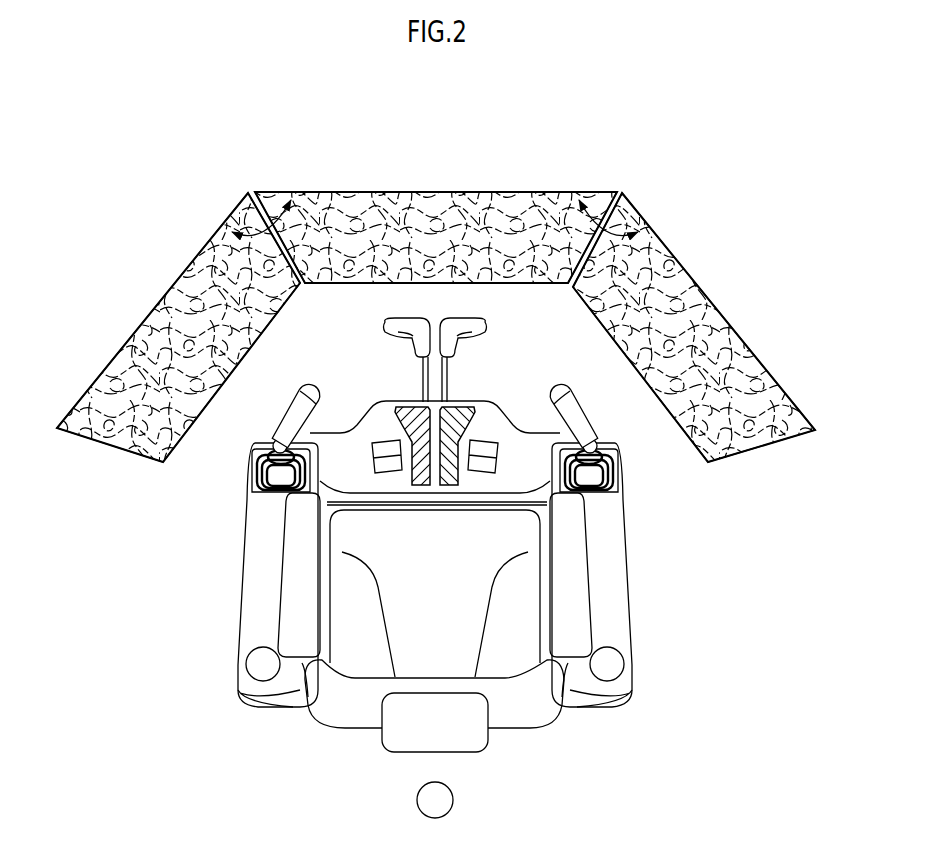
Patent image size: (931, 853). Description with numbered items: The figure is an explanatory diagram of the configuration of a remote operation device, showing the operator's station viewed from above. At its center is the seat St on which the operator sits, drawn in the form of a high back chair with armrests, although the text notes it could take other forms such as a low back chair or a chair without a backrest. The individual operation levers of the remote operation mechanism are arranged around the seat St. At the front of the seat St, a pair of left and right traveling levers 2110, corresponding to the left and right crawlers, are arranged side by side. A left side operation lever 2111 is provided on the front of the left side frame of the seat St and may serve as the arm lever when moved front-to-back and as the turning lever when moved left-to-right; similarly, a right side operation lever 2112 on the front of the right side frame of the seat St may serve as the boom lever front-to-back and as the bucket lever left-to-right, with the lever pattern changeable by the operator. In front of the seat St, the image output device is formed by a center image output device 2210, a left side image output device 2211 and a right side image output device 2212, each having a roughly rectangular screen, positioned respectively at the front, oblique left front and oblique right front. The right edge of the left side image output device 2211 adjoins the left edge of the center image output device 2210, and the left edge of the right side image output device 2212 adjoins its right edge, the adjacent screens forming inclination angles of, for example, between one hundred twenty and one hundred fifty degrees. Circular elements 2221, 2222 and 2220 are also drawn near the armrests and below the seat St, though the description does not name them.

The center image output device 2210 is at (427, 178).
The left side image output device 2211 is at (155, 291).
The right side image output device 2212 is at (716, 285).
The traveling levers 2110 is at (468, 300).
The left side operation lever 2111 is at (308, 372).
The right side operation lever 2112 is at (561, 372).
The left speaker 2221 is at (240, 664).
The right speaker 2222 is at (630, 664).
The bottom speaker 2220 is at (414, 801).
The seat St is at (512, 626).